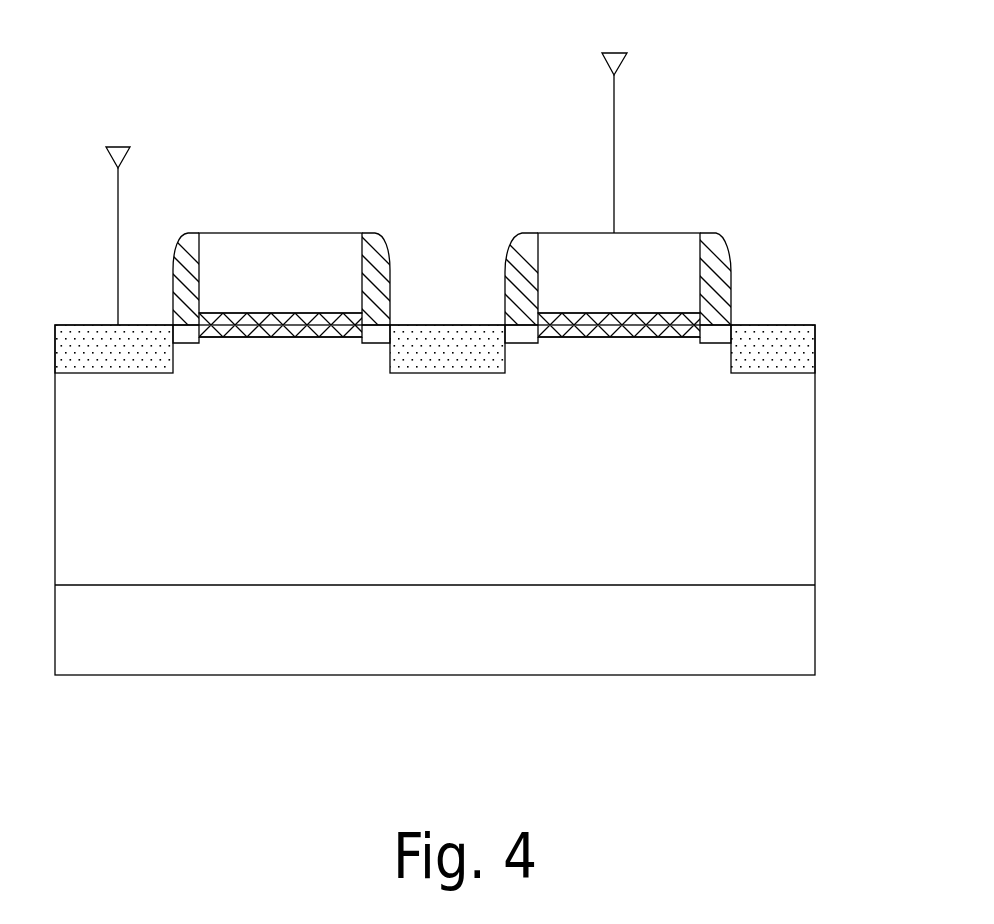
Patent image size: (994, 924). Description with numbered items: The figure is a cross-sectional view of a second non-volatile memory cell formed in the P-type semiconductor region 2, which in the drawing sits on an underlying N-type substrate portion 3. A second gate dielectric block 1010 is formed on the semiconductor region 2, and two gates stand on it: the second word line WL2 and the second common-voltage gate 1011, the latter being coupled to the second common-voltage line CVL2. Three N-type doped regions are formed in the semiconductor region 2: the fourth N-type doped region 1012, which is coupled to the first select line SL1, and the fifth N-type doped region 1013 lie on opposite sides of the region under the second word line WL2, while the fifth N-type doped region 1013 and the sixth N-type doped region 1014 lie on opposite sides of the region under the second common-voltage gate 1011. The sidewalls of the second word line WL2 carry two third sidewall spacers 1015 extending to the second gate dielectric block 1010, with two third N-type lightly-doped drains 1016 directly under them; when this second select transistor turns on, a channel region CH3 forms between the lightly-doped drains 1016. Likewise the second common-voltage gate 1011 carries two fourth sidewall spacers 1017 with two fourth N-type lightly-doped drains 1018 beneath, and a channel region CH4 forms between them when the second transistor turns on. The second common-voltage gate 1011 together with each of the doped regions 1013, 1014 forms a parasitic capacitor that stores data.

The semiconductor region 2 is at (422, 585).
The N-type substrate region 3 is at (360, 675).
The second gate dielectric block 1010 is at (257, 312).
The second common-voltage gate 1011 is at (587, 238).
The fourth N-type doped region 1012 is at (104, 373).
The fifth N-type doped region 1013 is at (450, 365).
The sixth N-type doped region 1014 is at (767, 365).
The third sidewall spacers 1015 is at (193, 243).
The third N-type lightly-doped drains 1016 is at (190, 343).
The fourth sidewall spacers 1017 is at (517, 253).
The fourth N-type lightly-doped drains 1018 is at (527, 342).
The second word line WL2 is at (297, 238).
The first select line SL1 is at (112, 220).
The second common-voltage line CVL2 is at (607, 127).
The channel region CH3 is at (272, 338).
The channel region CH4 is at (613, 338).